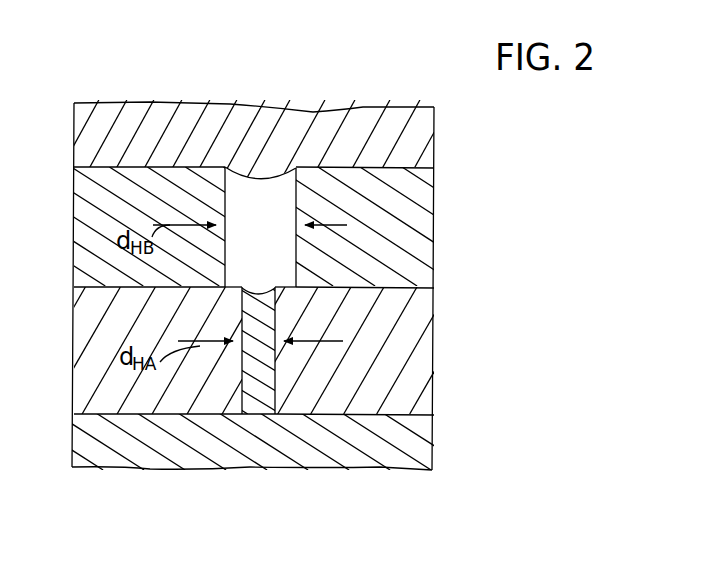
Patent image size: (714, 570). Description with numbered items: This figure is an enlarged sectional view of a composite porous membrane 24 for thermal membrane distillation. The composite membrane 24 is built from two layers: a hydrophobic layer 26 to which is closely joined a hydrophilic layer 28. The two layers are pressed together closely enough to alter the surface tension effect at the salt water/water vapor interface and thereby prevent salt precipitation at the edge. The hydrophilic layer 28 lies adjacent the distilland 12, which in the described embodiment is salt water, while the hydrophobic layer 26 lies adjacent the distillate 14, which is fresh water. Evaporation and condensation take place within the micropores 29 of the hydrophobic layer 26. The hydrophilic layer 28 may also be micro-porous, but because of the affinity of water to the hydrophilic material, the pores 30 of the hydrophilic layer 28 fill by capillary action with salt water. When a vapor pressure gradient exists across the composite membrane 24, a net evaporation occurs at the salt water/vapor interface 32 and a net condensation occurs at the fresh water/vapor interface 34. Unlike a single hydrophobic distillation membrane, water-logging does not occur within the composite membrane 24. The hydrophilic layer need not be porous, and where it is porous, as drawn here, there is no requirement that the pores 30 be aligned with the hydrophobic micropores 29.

The distilland 12 is at (90, 425).
The distillate 14 is at (137, 110).
The composite porous membrane 24 is at (242, 480).
The hydrophobic layer 26 is at (97, 213).
The hydrophilic layer 28 is at (87, 323).
The micropores 29 is at (290, 243).
The pores of the hydrophilic layer 30 is at (252, 378).
The salt water/vapor interface 32 is at (255, 290).
The fresh water/vapor interface 34 is at (265, 179).